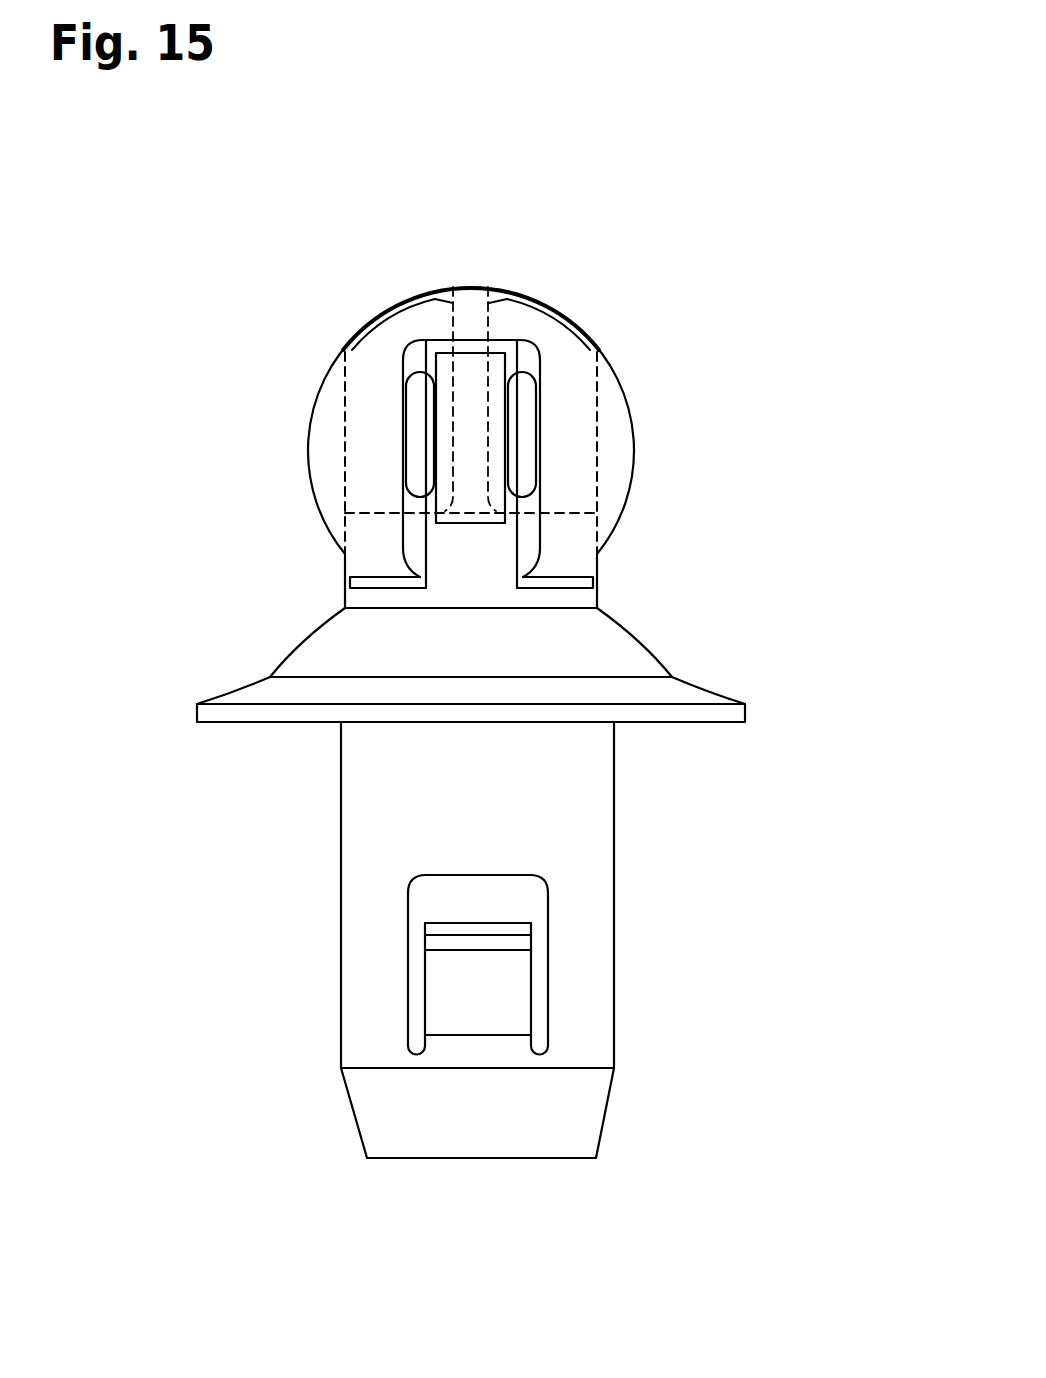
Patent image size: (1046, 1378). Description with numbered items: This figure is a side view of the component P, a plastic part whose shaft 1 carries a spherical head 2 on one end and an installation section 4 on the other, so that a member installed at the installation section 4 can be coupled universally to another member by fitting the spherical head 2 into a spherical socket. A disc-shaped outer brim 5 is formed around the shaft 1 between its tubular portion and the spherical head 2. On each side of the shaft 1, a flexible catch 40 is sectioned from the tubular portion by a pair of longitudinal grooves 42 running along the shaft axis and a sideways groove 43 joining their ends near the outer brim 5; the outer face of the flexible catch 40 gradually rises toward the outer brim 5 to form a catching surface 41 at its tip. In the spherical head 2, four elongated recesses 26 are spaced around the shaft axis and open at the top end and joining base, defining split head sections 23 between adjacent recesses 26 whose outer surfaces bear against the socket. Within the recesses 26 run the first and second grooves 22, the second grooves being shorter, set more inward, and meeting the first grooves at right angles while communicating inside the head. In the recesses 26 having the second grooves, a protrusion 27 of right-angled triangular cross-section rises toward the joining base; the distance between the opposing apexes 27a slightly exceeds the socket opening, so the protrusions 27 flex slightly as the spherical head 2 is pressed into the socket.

The component P is at (641, 246).
The spherical head 2 is at (607, 400).
The first and second grooves 22 is at (420, 413).
The split head sections 23 is at (345, 470).
The protrusion 27 is at (468, 500).
The apex 27a is at (505, 520).
The recess 26 is at (458, 562).
The outer brim 5 is at (737, 707).
The shaft 1 is at (590, 790).
The installation section 4 is at (599, 943).
The groove 43 is at (465, 892).
The catching surface 41 is at (458, 930).
The longitudinal grooves 42 is at (420, 1002).
The flexible catch 40 is at (483, 992).